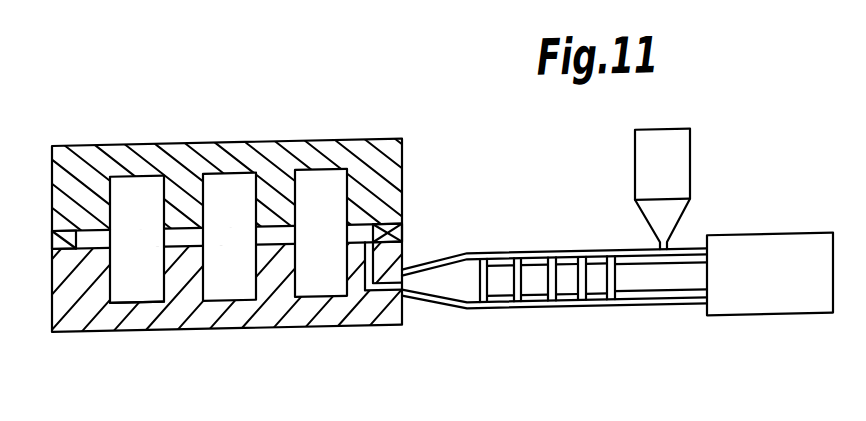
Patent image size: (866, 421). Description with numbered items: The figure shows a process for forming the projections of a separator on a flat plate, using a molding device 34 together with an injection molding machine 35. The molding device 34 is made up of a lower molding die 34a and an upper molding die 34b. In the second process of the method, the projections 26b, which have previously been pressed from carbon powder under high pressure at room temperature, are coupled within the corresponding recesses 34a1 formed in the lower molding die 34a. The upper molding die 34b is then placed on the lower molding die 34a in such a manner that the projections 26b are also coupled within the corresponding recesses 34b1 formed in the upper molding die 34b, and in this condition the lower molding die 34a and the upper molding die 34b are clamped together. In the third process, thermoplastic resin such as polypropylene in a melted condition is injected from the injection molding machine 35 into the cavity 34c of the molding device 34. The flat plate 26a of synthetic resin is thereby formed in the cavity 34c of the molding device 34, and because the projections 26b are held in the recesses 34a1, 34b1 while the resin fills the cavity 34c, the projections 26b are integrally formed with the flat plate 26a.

The molding device 34 is at (63, 141).
The lower molding die 34a is at (378, 311).
The upper molding die 34b is at (402, 158).
The recesses of the lower molding die 34a1 is at (139, 306).
The recesses of the upper molding die 34b1 is at (135, 181).
The flat plate 26a is at (270, 240).
The projections 26b is at (232, 186).
The cavity 34c is at (385, 229).
The injection molding machine 35 is at (557, 262).